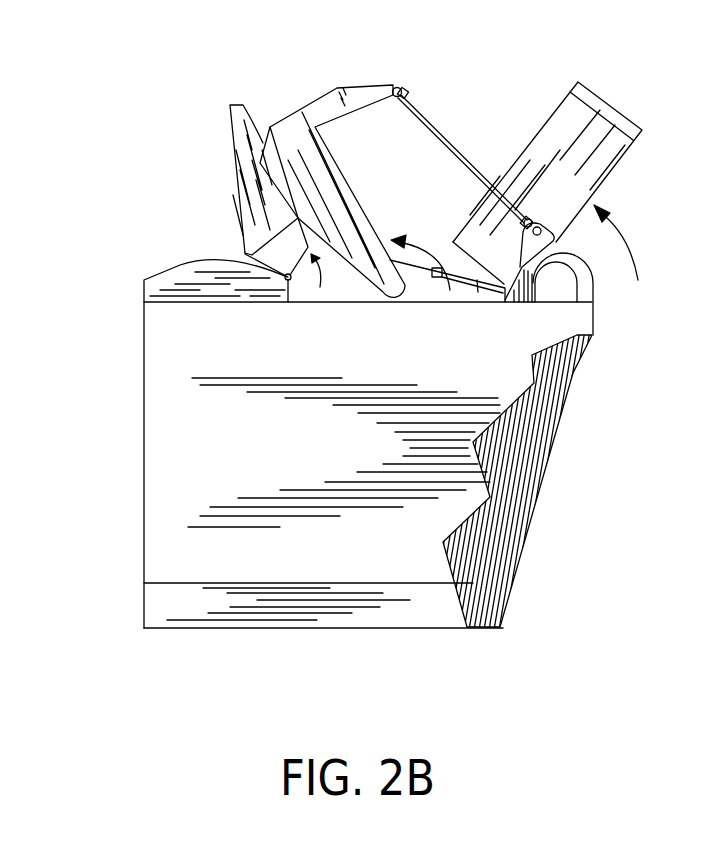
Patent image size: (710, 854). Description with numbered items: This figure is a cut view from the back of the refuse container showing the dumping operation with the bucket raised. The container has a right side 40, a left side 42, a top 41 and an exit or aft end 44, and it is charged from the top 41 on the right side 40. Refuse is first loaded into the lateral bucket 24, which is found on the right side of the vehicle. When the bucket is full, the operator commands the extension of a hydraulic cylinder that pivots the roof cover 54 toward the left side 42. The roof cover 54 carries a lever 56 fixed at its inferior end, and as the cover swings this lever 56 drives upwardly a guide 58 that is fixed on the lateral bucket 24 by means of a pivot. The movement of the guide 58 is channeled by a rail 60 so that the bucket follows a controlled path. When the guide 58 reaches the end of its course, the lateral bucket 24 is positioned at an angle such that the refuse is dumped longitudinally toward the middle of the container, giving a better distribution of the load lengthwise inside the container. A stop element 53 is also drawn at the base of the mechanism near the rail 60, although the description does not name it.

The lateral bucket 24 is at (592, 130).
The right side 40 is at (547, 463).
The top 41 is at (407, 268).
The left side 42 is at (143, 412).
The aft end 44 is at (318, 540).
The stop 53 is at (478, 292).
The roof cover 54 is at (312, 105).
The lever 56 is at (433, 118).
The guide 58 is at (553, 243).
The rail 60 is at (580, 278).